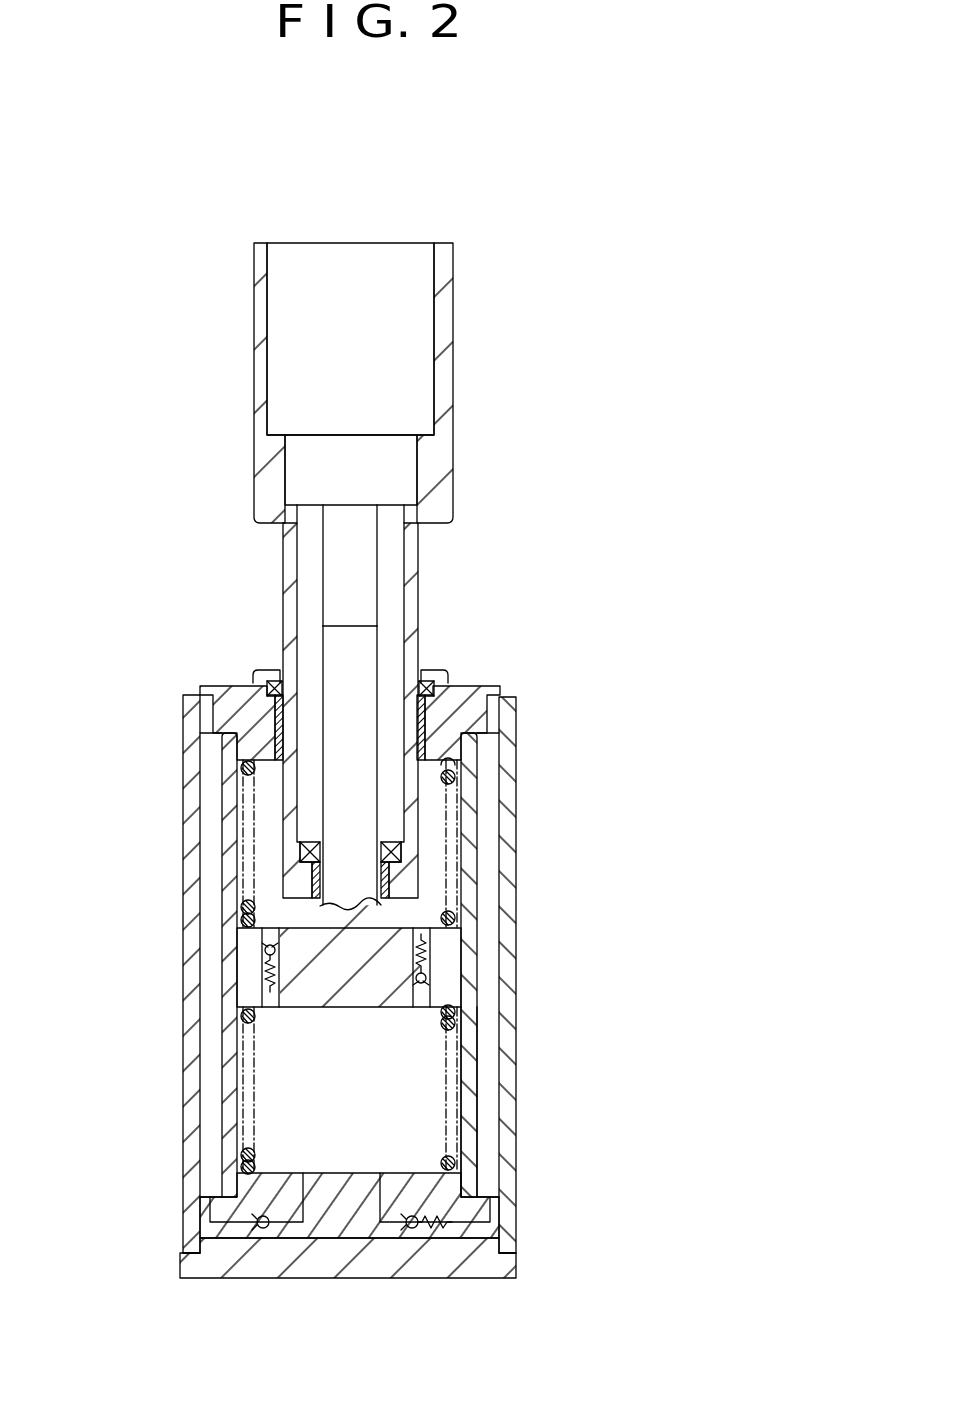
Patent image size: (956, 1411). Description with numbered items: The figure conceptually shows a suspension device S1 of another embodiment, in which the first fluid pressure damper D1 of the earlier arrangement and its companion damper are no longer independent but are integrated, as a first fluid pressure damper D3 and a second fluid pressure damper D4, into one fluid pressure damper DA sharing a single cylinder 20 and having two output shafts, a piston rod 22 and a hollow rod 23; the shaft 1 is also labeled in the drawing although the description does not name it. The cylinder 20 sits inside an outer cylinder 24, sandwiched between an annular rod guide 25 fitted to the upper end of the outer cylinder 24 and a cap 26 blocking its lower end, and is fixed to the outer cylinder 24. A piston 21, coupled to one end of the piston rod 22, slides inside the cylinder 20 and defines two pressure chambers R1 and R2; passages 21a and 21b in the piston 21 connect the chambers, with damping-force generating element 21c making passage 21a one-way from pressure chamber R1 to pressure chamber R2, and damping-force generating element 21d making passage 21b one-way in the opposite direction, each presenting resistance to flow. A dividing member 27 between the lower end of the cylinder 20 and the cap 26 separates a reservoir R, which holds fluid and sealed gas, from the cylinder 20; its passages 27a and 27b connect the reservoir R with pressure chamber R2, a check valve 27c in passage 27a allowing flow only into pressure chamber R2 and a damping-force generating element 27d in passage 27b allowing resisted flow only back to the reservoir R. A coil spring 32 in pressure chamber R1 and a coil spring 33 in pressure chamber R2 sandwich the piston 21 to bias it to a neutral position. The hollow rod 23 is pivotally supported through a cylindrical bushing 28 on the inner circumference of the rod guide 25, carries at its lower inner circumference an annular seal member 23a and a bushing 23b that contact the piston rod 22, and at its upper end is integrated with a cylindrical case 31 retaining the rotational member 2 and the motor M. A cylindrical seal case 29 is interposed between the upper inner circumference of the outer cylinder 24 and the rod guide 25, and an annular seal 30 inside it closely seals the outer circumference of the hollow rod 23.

The motor M is at (409, 280).
The suspension device S1 is at (514, 329).
The cylindrical case 31 is at (447, 394).
The first fluid pressure damper D1 is at (238, 470).
The rotational member 2 is at (396, 482).
The motor shaft 1 is at (363, 568).
The piston rod 22 is at (380, 640).
The first fluid pressure damper D3 is at (317, 645).
The hollow rod 23 is at (288, 643).
The annular seal member 23a is at (300, 855).
The bushing 23b is at (405, 872).
The cylindrical seal case 29 is at (460, 683).
The annular seal 30 is at (257, 682).
The annular rod guide 25 is at (472, 705).
The cylindrical bushing 28 is at (263, 720).
The fluid pressure damper DA is at (525, 703).
The coil spring 32 is at (460, 777).
The second fluid pressure damper D4 is at (277, 803).
The pressure chamber R1 is at (430, 818).
The cylinder 20 is at (478, 873).
The coil spring 33 is at (462, 1058).
The piston 21 is at (450, 963).
The passage 21a is at (293, 1002).
The passage 21b is at (405, 1002).
The damping-force generating element 21c is at (267, 945).
The damping-force generating element 21d is at (427, 982).
The reservoir R is at (213, 998).
The pressure chamber R2 is at (410, 1082).
The outer cylinder 24 is at (510, 1025).
The dividing member 27 is at (247, 1187).
The passage 27a is at (317, 1197).
The passage 27b is at (378, 1197).
The check valve 27c is at (258, 1228).
The damping-force generating element 27d is at (395, 1230).
The cap 26 is at (498, 1268).